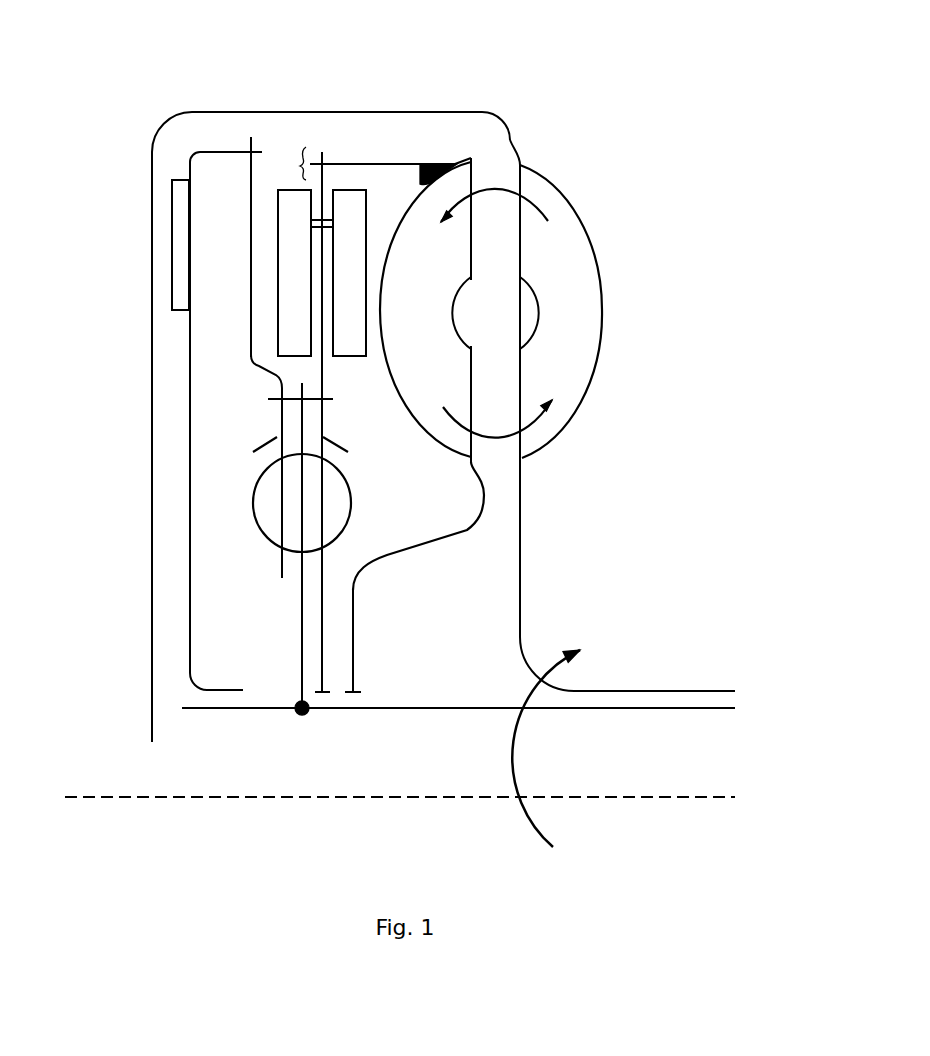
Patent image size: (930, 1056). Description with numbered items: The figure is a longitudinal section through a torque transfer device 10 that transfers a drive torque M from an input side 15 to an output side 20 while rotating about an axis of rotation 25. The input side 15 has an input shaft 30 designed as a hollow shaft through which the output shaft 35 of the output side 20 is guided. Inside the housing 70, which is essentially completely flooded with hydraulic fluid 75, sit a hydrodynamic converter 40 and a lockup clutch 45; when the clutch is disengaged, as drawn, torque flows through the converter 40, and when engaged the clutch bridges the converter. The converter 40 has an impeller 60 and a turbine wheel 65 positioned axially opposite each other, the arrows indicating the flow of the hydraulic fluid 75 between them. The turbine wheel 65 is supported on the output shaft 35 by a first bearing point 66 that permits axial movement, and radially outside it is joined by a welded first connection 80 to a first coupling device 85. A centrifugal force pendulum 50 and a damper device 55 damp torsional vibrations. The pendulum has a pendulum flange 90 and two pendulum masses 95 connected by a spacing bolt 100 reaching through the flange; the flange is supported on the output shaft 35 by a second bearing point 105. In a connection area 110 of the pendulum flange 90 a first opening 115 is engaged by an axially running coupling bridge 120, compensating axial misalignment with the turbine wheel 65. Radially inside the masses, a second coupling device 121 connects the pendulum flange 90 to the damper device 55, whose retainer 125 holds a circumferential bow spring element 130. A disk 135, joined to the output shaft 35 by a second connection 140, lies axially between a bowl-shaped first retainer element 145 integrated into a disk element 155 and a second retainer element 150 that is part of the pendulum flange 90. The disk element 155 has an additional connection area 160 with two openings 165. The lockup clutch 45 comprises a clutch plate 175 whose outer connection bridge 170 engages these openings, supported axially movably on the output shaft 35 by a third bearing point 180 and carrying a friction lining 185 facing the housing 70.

The torque transfer device 10 is at (637, 115).
The input side 15 is at (640, 642).
The output side 20 is at (643, 737).
The axis of rotation 25 is at (720, 797).
The input shaft 30 is at (703, 691).
The output shaft 35 is at (613, 708).
The hydrodynamic converter 40 is at (543, 140).
The lockup clutch 45 is at (193, 112).
The centrifugal force pendulum 50 is at (368, 145).
The damper device 55 is at (243, 566).
The impeller 60 is at (570, 312).
The turbine wheel 65 is at (437, 262).
The first bearing point 66 is at (355, 700).
The housing 70 is at (482, 112).
The hydraulic fluid 75 is at (530, 197).
The first connection 80 is at (448, 160).
The first coupling device 85 is at (407, 163).
The pendulum flange 90 is at (322, 390).
The pendulum masses 95 is at (345, 200).
The spacing bolt 100 is at (313, 220).
The second bearing point 105 is at (327, 708).
The connection area 110 is at (305, 163).
The first opening 115 is at (323, 131).
The coupling bridge 120 is at (430, 163).
The second coupling device 121 is at (250, 399).
The retainer 125 is at (216, 474).
The spring element 130 is at (340, 535).
The disk 135 is at (300, 628).
The second connection 140 is at (302, 712).
The first retainer element 145 is at (278, 580).
The second retainer element 150 is at (325, 487).
The disk element 155 is at (253, 358).
The additional connection area 160 is at (251, 118).
The openings 165 is at (245, 153).
The connection bridge 170 is at (209, 129).
The clutch plate 175 is at (190, 533).
The third bearing point 180 is at (218, 692).
The friction lining 185 is at (180, 283).
The drive torque M is at (535, 833).